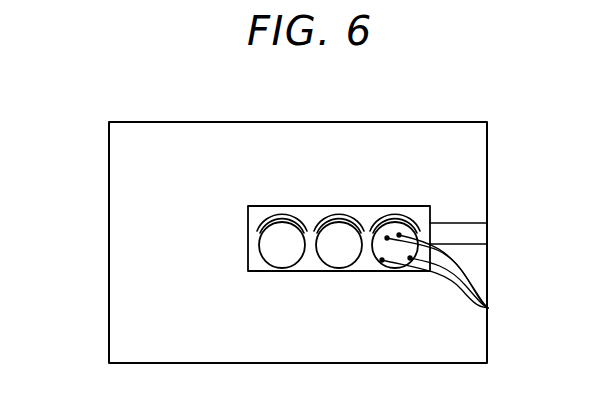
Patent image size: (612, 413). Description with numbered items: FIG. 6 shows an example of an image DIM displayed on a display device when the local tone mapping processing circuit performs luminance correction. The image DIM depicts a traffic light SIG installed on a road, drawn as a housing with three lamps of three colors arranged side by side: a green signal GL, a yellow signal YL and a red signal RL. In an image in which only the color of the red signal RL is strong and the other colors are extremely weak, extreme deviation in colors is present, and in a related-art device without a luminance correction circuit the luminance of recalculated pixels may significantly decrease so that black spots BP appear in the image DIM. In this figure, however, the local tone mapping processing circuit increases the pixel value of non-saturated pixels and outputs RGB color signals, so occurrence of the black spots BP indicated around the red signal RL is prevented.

The green signal GL is at (285, 215).
The yellow signal YL is at (342, 215).
The red signal RL is at (397, 215).
The traffic light SIG is at (223, 233).
The image DIM is at (487, 153).
The black spot BP is at (490, 308).